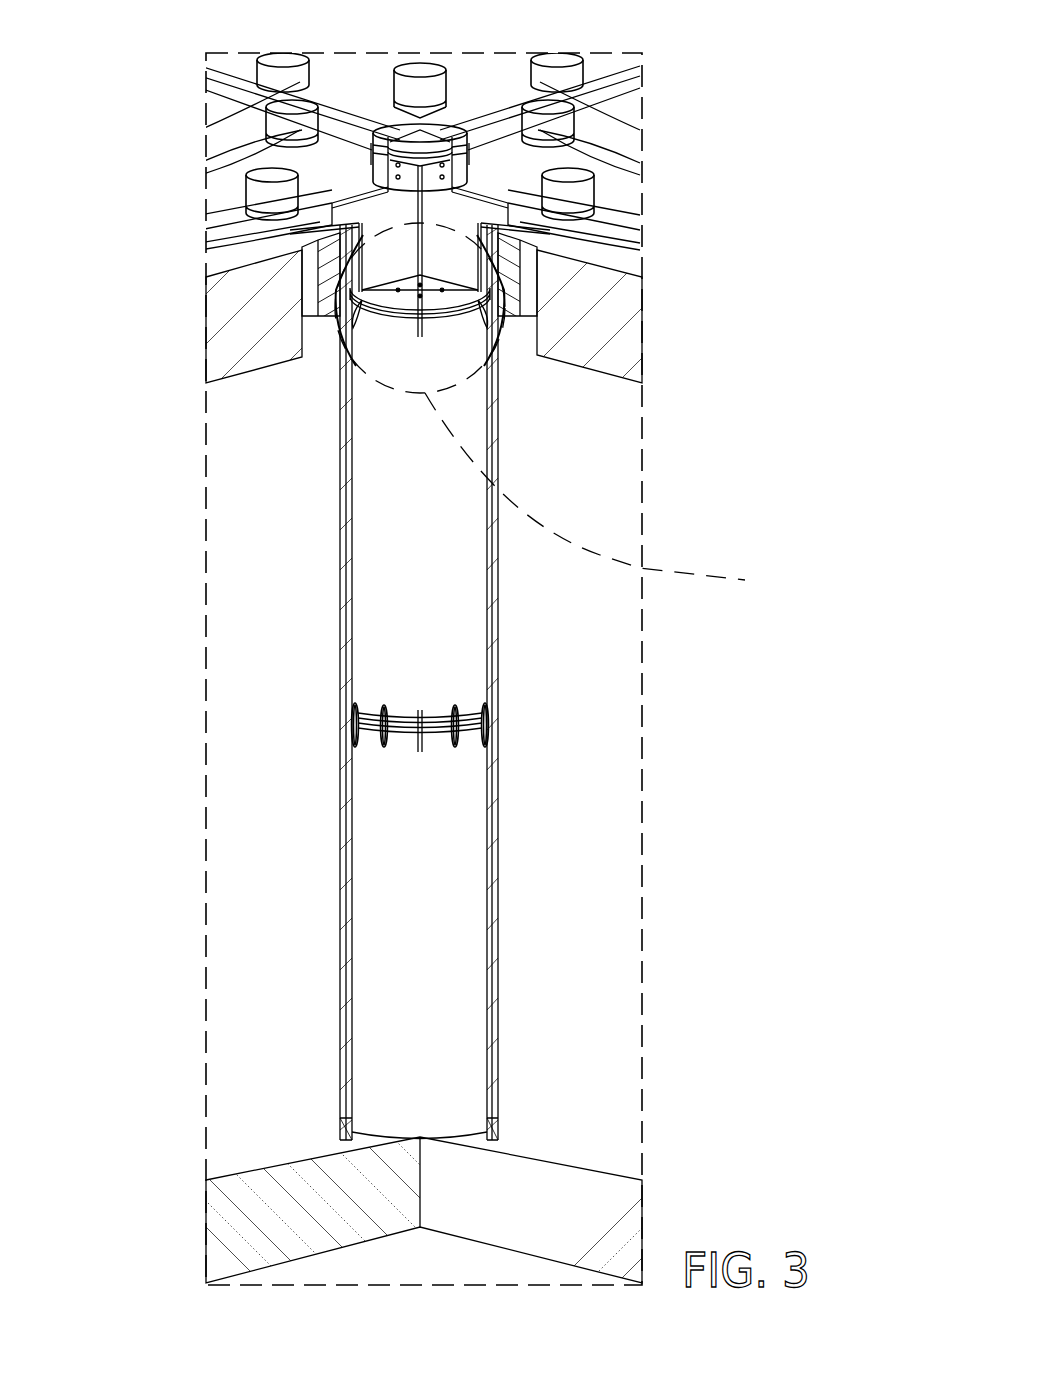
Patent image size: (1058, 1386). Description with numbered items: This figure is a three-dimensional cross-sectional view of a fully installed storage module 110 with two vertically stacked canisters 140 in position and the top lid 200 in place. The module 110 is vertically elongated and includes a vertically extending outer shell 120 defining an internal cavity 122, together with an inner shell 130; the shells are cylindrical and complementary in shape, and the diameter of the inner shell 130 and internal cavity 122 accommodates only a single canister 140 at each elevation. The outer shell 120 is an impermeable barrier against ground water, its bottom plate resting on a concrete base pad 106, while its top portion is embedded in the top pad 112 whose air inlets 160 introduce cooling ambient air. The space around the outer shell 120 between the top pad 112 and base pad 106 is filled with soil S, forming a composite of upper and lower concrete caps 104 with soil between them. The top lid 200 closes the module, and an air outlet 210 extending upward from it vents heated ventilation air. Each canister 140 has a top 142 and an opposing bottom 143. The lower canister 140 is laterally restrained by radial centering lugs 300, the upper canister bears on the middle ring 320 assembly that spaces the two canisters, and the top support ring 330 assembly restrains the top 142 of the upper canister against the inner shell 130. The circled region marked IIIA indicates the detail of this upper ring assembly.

The concrete cap 104 is at (610, 343).
The concrete base pad 106 is at (600, 1205).
The storage module 110 is at (275, 533).
The top pad 112 is at (527, 278).
The outer shell 120 is at (338, 628).
The internal cavity 122 is at (482, 636).
The inner shell 130 is at (352, 508).
The canister 140 is at (450, 573).
The top 142 is at (134, 223).
The bottom 143 is at (393, 777).
The air inlet 160 is at (583, 192).
The top lid 200 is at (510, 175).
The air outlet 210 is at (467, 130).
The centering lug 300 is at (500, 1132).
The middle ring 320 is at (500, 713).
The support ring 330 is at (412, 319).
The soil S is at (600, 905).
The section detail IIIA is at (800, 597).